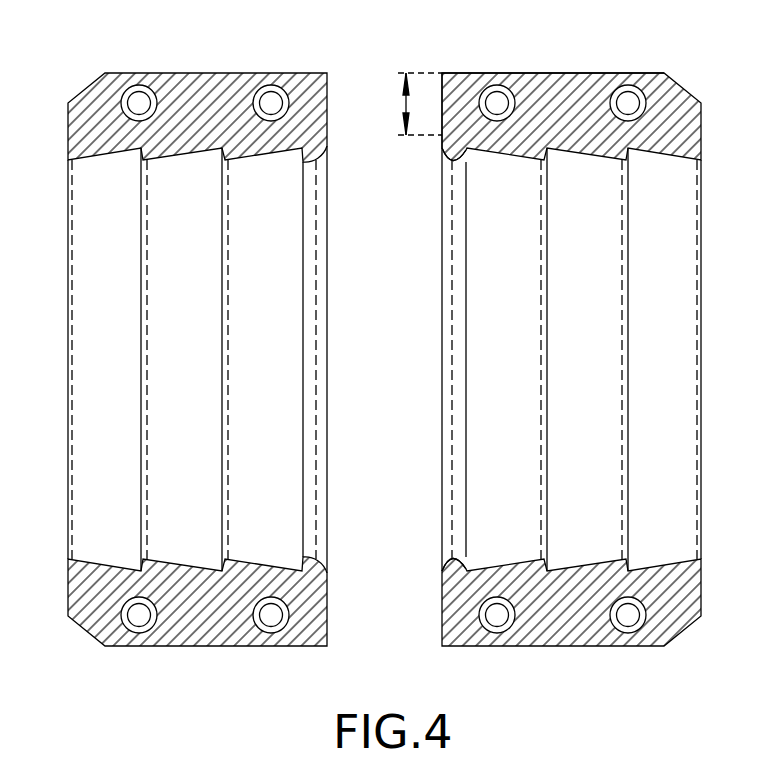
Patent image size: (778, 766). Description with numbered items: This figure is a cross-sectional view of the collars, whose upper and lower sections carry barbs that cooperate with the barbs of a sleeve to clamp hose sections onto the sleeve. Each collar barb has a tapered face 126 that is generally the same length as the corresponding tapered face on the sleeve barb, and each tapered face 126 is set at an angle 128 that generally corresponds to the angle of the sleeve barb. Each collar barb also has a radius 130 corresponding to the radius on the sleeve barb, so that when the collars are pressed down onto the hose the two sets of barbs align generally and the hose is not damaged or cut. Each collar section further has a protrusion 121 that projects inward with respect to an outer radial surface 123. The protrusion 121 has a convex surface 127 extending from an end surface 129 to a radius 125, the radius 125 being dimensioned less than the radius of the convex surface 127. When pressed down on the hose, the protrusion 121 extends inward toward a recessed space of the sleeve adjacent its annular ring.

The protrusion 121 is at (452, 160).
The outer radial surface 123 is at (474, 73).
The radius 125 is at (458, 163).
The tapered face 126 is at (507, 153).
The convex surface 127 is at (455, 163).
The angle 128 is at (400, 100).
The end surface 129 is at (442, 115).
The radius 130 is at (627, 160).